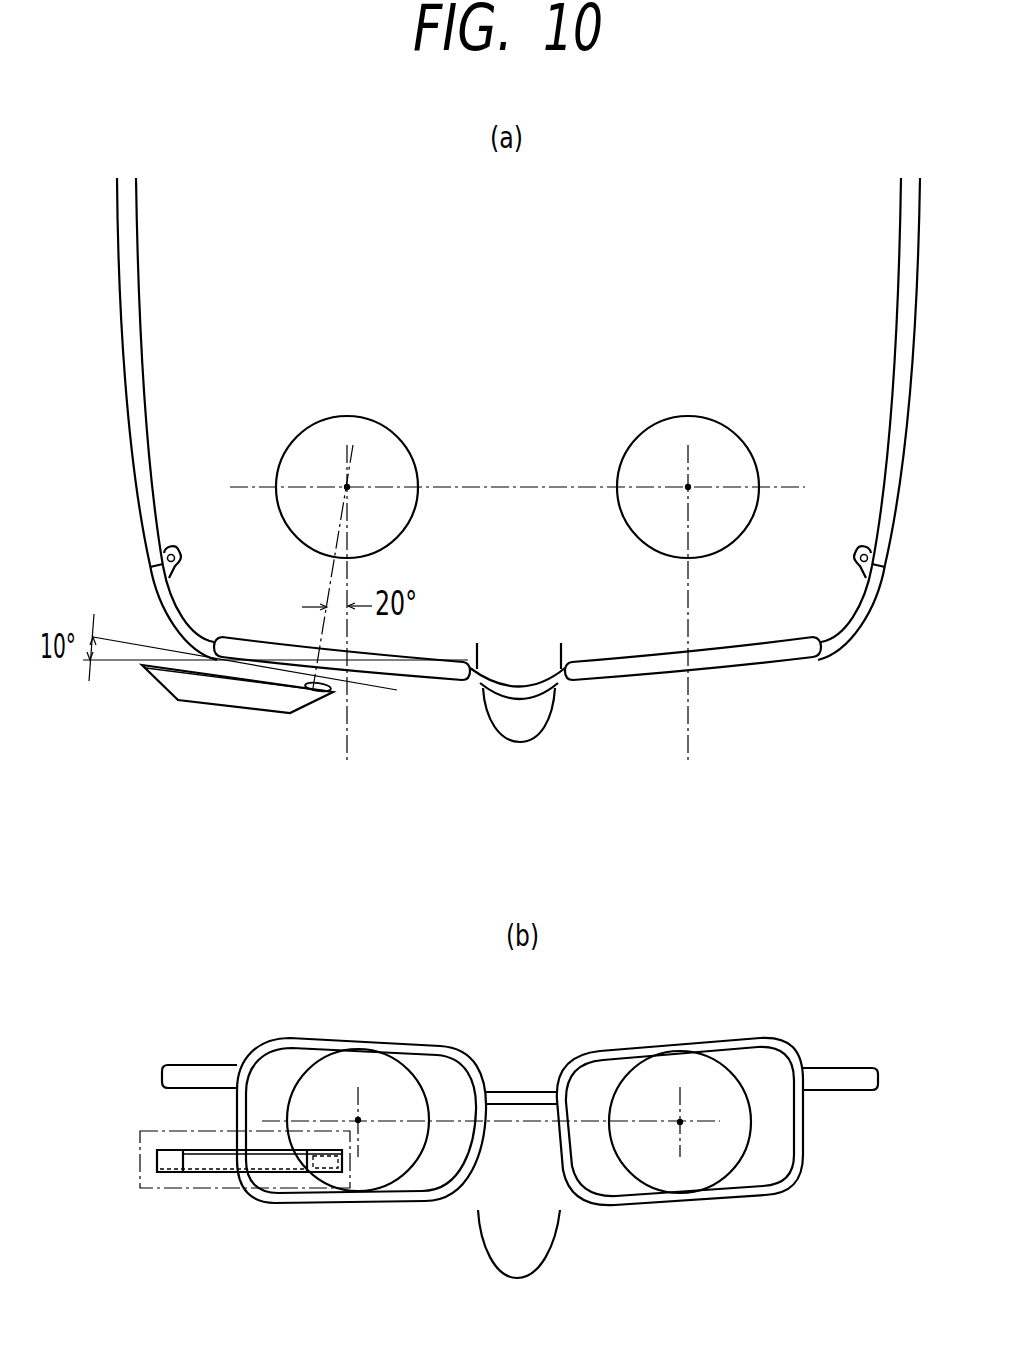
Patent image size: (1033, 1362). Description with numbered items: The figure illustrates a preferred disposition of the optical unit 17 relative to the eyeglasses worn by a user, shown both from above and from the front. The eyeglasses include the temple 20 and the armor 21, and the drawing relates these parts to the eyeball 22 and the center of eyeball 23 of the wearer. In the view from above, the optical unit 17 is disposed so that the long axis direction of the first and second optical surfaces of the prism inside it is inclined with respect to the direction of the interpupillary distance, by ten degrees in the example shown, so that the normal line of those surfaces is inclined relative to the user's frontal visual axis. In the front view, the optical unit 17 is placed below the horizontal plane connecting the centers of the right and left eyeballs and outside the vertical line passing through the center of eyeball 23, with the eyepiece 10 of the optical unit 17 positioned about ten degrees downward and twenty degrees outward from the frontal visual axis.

The eyepiece 10 is at (333, 690).
The optical unit 17 is at (240, 710).
The temple 20 is at (132, 294).
The armor 21 is at (173, 611).
The eyeball 22 is at (401, 437).
The center of eyeball 23 is at (347, 487).